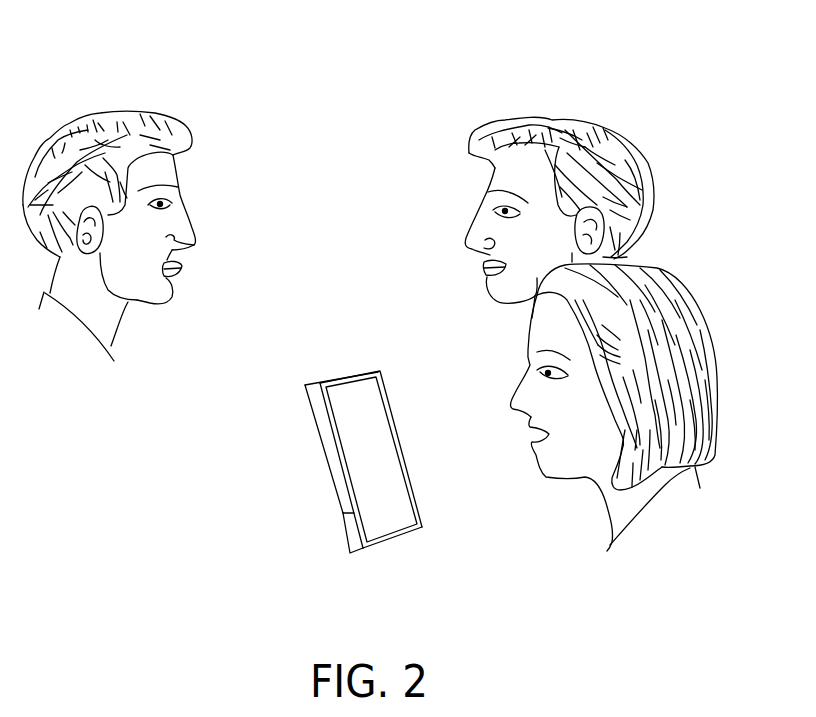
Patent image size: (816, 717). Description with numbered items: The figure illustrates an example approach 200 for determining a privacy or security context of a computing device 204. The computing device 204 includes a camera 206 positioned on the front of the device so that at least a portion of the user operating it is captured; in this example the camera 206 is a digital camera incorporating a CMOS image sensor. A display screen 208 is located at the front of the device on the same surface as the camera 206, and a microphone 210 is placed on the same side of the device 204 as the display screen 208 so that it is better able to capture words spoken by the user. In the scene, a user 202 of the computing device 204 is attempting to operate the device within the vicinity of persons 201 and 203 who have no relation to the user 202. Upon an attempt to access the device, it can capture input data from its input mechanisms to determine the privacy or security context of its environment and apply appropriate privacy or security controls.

The approach 200 is at (712, 72).
The person 201 is at (202, 148).
The user 202 is at (663, 532).
The person 203 is at (450, 163).
The computing device 204 is at (326, 462).
The camera 206 is at (350, 383).
The display screen 208 is at (348, 514).
The microphone 210 is at (394, 535).